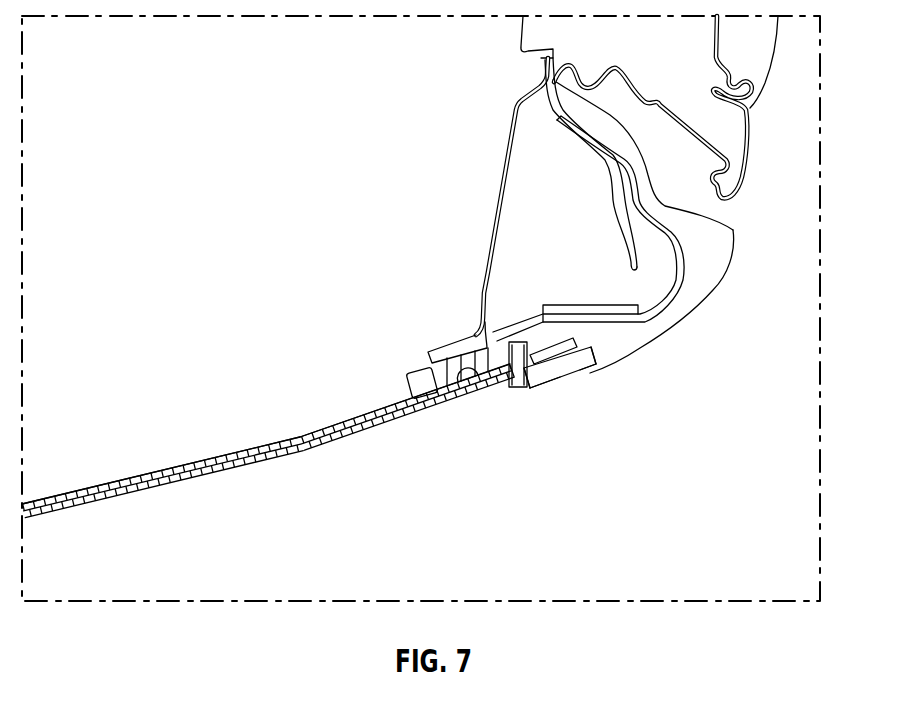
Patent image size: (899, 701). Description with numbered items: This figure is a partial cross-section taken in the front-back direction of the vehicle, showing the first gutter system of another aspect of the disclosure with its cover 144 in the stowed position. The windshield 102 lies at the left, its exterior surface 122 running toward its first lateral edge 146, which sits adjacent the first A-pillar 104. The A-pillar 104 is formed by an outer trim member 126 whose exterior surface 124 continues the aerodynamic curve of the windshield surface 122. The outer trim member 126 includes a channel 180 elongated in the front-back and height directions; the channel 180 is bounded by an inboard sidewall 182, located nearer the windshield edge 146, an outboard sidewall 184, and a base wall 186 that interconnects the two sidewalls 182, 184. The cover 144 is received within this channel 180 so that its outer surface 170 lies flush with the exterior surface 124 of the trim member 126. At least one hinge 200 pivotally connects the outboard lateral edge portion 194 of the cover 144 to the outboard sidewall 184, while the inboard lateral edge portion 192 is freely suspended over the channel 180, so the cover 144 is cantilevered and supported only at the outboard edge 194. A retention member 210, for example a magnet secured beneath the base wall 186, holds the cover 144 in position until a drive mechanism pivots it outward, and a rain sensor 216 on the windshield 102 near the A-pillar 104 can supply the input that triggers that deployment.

The front windshield 102 is at (157, 487).
The first A-pillar 104 is at (737, 230).
The exterior surface of the windshield 122 is at (263, 461).
The exterior surface of the first A-pillar 124 is at (707, 302).
The outer trim member 126 is at (724, 268).
The cover 144 is at (577, 380).
The first lateral edge of the windshield 146 is at (478, 403).
The outer surface of the cover 170 is at (550, 386).
The channel 180 is at (590, 347).
The inboard sidewall 182 is at (507, 393).
The outboard sidewall 184 is at (595, 362).
The base wall 186 is at (567, 337).
The inboard lateral edge portion 192 is at (543, 391).
The outboard lateral edge portion 194 is at (596, 377).
The hinge 200 is at (604, 377).
The retention member 210 is at (537, 333).
The sensor 216 is at (425, 367).